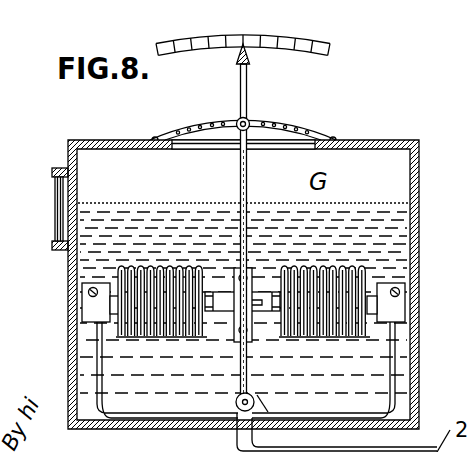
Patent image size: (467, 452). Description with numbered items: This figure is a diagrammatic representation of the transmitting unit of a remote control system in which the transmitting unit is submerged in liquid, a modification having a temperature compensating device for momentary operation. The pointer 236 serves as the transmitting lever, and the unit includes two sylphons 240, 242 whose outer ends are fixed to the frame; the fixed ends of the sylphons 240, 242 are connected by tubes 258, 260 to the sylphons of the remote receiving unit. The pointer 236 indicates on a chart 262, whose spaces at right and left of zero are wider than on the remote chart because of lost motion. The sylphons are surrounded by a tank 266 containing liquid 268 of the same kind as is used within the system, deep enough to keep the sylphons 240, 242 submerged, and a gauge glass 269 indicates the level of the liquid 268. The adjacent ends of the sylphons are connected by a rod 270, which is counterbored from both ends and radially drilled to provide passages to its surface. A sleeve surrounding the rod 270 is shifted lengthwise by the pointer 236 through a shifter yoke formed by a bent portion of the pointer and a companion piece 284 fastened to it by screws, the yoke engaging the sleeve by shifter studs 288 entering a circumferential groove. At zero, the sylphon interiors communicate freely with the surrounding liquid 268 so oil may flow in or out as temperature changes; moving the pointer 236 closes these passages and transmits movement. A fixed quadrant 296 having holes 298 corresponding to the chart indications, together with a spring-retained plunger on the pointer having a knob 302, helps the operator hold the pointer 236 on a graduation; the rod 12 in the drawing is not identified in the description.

The pointer rod 12 is at (247, 83).
The pointer 236 is at (240, 65).
The sylphon 240 is at (140, 266).
The sylphon 242 is at (355, 264).
The tube 258 is at (97, 343).
The tube 260 is at (395, 350).
The chart 262 is at (322, 50).
The tank 266 is at (419, 190).
The liquid 268 is at (157, 220).
The gauge glass 269 is at (52, 198).
The rod 270 is at (262, 292).
The companion piece 284 is at (253, 298).
The shifter studs 288 is at (250, 297).
The fixed quadrant 296 is at (292, 124).
The holes 298 is at (201, 125).
The knob 302 is at (250, 120).